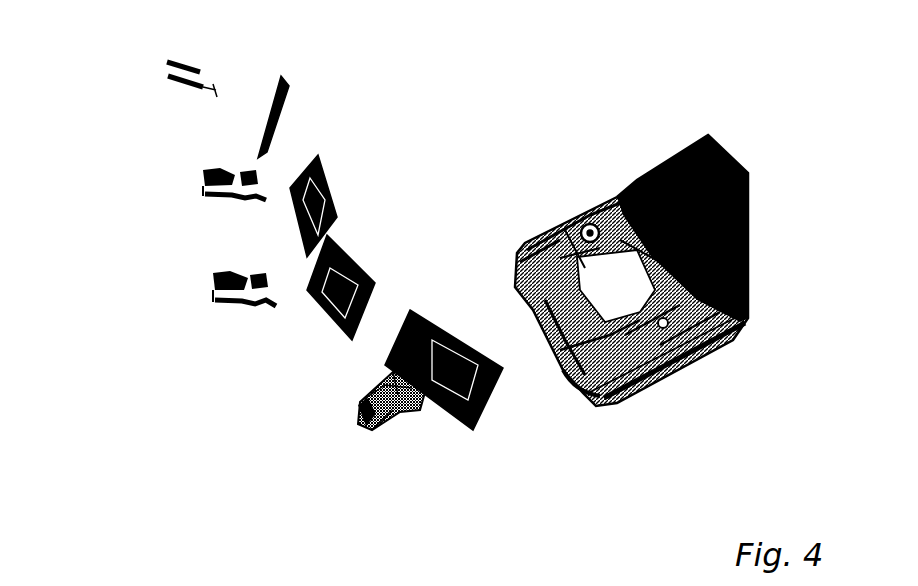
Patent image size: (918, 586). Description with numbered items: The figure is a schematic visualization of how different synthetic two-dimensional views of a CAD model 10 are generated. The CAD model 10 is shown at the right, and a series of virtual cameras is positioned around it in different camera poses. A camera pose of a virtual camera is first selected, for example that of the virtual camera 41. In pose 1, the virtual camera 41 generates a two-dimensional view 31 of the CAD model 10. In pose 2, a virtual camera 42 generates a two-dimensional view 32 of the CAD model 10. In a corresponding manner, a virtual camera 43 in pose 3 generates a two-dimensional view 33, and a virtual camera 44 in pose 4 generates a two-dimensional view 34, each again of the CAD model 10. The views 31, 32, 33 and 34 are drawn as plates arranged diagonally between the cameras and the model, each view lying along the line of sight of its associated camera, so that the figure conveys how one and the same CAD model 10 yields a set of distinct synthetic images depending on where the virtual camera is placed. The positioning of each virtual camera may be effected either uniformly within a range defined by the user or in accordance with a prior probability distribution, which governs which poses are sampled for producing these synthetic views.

The CAD model 10 is at (628, 158).
The pose 1 is at (406, 458).
The pose 2 is at (250, 355).
The pose 3 is at (130, 229).
The pose 4 is at (120, 74).
The 2D view 31 is at (495, 350).
The 2D view 32 is at (357, 257).
The 2D view 33 is at (330, 173).
The 2D view 34 is at (290, 100).
The virtual camera 41 is at (352, 410).
The virtual camera 42 is at (200, 306).
The virtual camera 43 is at (191, 188).
The virtual camera 44 is at (188, 58).